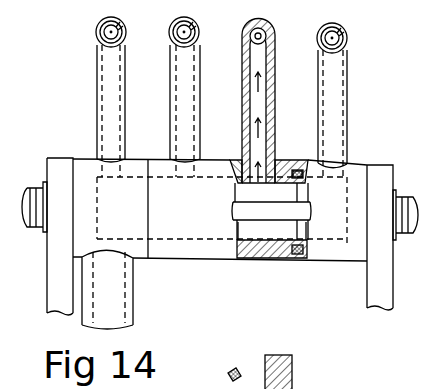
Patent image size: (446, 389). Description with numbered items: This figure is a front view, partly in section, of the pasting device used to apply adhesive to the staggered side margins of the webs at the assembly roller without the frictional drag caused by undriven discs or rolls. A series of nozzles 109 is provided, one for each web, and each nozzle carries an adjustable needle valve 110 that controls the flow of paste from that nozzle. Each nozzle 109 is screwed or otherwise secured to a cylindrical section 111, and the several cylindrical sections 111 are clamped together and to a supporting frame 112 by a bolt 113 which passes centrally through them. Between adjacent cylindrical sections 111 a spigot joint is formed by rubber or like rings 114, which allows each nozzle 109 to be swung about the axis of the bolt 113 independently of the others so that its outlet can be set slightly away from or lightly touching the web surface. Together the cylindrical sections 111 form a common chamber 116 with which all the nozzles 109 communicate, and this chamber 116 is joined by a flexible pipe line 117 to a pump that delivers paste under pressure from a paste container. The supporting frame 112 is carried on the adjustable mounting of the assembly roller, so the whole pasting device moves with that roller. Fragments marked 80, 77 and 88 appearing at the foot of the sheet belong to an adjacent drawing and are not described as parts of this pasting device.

The nozzle 109 is at (100, 103).
The adjustable needle valve 110 is at (347, 39).
The cylindrical section 111 is at (165, 223).
The supporting frame 112 is at (61, 158).
The bolt 113 is at (302, 210).
The rubber ring 114 is at (298, 164).
The common chamber 116 is at (248, 228).
The flexible pipe line 117 is at (112, 295).
The element of adjacent figure 80 is at (232, 375).
The element of adjacent figure 77 is at (292, 372).
The element of adjacent figure 88 is at (380, 380).